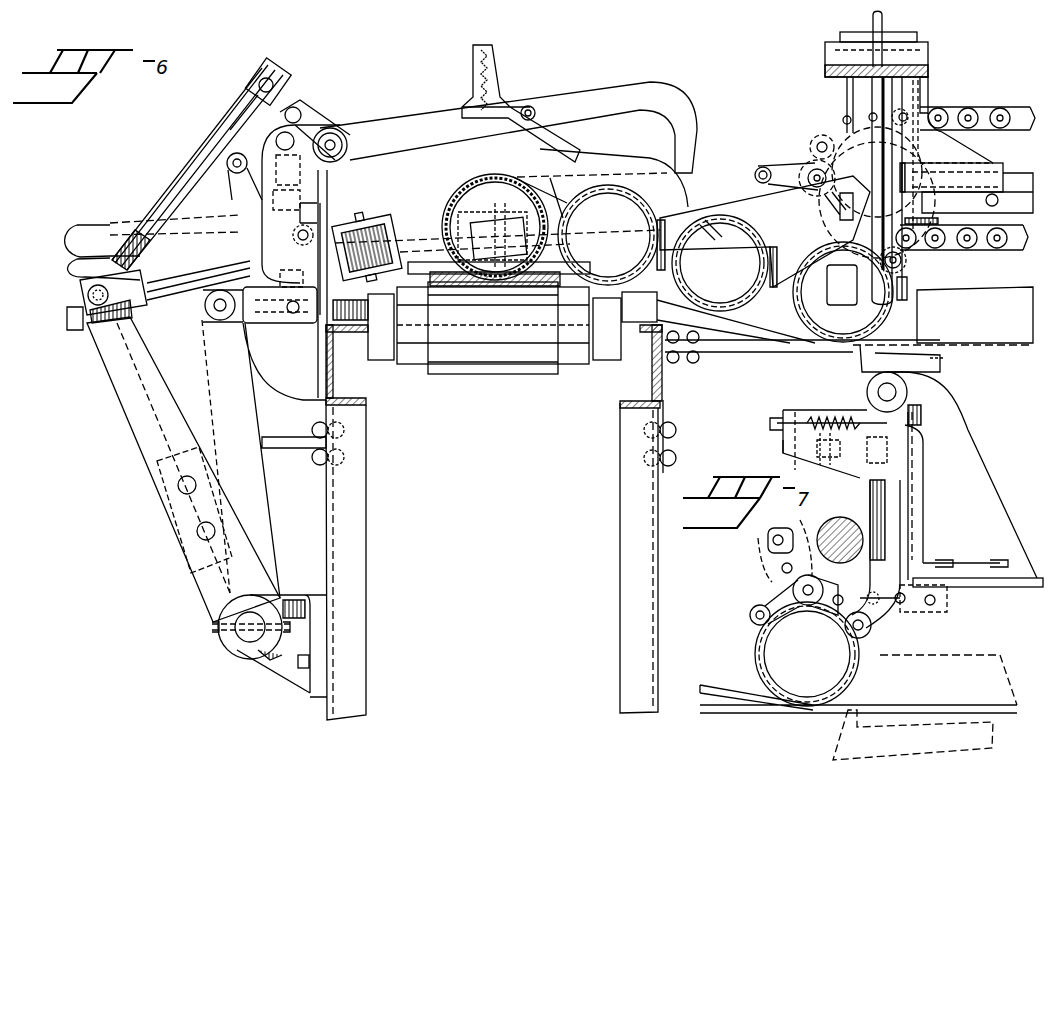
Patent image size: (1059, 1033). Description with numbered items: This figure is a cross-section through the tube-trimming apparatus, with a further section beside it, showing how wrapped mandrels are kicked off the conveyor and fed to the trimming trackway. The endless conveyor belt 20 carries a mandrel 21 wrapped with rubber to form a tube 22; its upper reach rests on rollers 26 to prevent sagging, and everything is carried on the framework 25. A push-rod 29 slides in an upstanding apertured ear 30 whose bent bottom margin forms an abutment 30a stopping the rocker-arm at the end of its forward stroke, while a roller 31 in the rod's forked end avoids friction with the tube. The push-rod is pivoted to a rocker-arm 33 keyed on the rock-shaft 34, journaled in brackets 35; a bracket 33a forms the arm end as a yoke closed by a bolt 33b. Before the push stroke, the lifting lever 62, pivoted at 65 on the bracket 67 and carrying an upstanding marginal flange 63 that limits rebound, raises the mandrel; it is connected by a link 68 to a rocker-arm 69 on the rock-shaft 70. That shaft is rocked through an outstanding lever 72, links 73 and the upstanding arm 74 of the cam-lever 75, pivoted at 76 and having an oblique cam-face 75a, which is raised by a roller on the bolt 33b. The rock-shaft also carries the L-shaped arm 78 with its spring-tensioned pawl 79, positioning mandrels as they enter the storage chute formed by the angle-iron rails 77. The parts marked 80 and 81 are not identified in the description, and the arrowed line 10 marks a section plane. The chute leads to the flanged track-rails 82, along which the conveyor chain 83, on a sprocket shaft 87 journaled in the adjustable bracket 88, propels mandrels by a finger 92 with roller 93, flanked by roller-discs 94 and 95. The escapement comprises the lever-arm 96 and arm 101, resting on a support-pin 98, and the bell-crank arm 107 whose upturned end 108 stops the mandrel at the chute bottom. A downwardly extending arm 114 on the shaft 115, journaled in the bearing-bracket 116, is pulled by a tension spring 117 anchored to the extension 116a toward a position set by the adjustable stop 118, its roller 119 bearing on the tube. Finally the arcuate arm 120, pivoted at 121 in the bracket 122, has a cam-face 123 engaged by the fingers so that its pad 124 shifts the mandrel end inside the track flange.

In FIG. 6, the machine 10 is at (950, 377).
In FIG. 6, the endless conveyor belt 20 is at (408, 260).
In FIG. 6, the mandrel 21 is at (462, 195).
In FIG. 7, the mandrel 21 is at (762, 655).
In FIG. 6, the tube 22 is at (495, 174).
In FIG. 6, the framework 25 is at (370, 473).
In FIG. 6, the rollers 26 is at (572, 343).
In FIG. 6, the push-rods 29 is at (178, 295).
In FIG. 6, the apertured ears 30 is at (334, 210).
In FIG. 6, the abutments 30a is at (270, 452).
In FIG. 6, the rollers 31 is at (374, 220).
In FIG. 6, the rocker-arm 33 is at (195, 570).
In FIG. 6, the bracket 33a is at (130, 440).
In FIG. 6, the bolt 33b is at (78, 298).
In FIG. 6, the rock-shaft 34 is at (243, 636).
In FIG. 6, the brackets 35 is at (282, 670).
In FIG. 6, the lifting lever 62 is at (362, 342).
In FIG. 6, the upstanding marginal flange 63 is at (414, 332).
In FIG. 6, the pivot 65 is at (212, 315).
In FIG. 6, the bracket 67 is at (255, 185).
In FIG. 6, the links 68 is at (270, 188).
In FIG. 6, the rocker-arms 69 is at (300, 110).
In FIG. 6, the rock-shaft 70 is at (343, 140).
In FIG. 6, the outstanding lever 72 is at (340, 128).
In FIG. 6, the links 73 is at (245, 130).
In FIG. 6, the upstanding arm 74 is at (225, 172).
In FIG. 6, the cam-lever 75 is at (75, 240).
In FIG. 6, the oblique cam-face 75a is at (127, 320).
In FIG. 6, the pivot 76 is at (140, 210).
In FIG. 6, the rails 77 is at (748, 352).
In FIG. 6, the L-shaped arms 78 is at (605, 100).
In FIG. 6, the spring-tensioned pawl 79 is at (580, 150).
In FIG. 6, the rod 80 is at (210, 140).
In FIG. 6, the rod head 81 is at (250, 90).
In FIG. 6, the track-rails 82 is at (975, 315).
In FIG. 6, the conveyor chains 83 is at (990, 115).
In FIG. 6, the shaft 87 is at (897, 170).
In FIG. 7, the shaft 87 is at (852, 512).
In FIG. 6, the brackets 88 is at (1022, 178).
In FIG. 7, the brackets 88 is at (1007, 583).
In FIG. 6, the finger 92 is at (808, 170).
In FIG. 7, the finger 92 is at (775, 595).
In FIG. 6, the roller 93 is at (756, 170).
In FIG. 7, the roller 93 is at (750, 612).
In FIG. 6, the roller-discs 94 is at (812, 145).
In FIG. 7, the roller-discs 94 is at (808, 543).
In FIG. 7, the roller-discs 95 is at (922, 612).
In FIG. 6, the lever-arms 96 is at (736, 205).
In FIG. 6, the support-pins 98 is at (1008, 225).
In FIG. 6, the arms 101 is at (790, 338).
In FIG. 6, the arm 107 is at (940, 363).
In FIG. 7, the arm 107 is at (950, 750).
In FIG. 6, the end portion 108 is at (871, 362).
In FIG. 7, the end portion 108 is at (840, 732).
In FIG. 6, the arms 114 is at (935, 250).
In FIG. 7, the arms 114 is at (880, 530).
In FIG. 7, the horizontal shaft 115 is at (907, 393).
In FIG. 7, the bearing-brackets 116 is at (962, 476).
In FIG. 7, the extension 116a is at (783, 447).
In FIG. 7, the tension spring 117 is at (830, 414).
In FIG. 7, the adjustable position-stop 118 is at (890, 452).
In FIG. 6, the work-engaging roller 119 is at (905, 262).
In FIG. 7, the work-engaging roller 119 is at (872, 630).
In FIG. 6, the arcuate arm 120 is at (855, 85).
In FIG. 6, the pivot 121 is at (842, 50).
In FIG. 6, the bracket 122 is at (915, 90).
In FIG. 6, the cam-face 123 is at (900, 50).
In FIG. 6, the work-engaging pad 124 is at (843, 322).